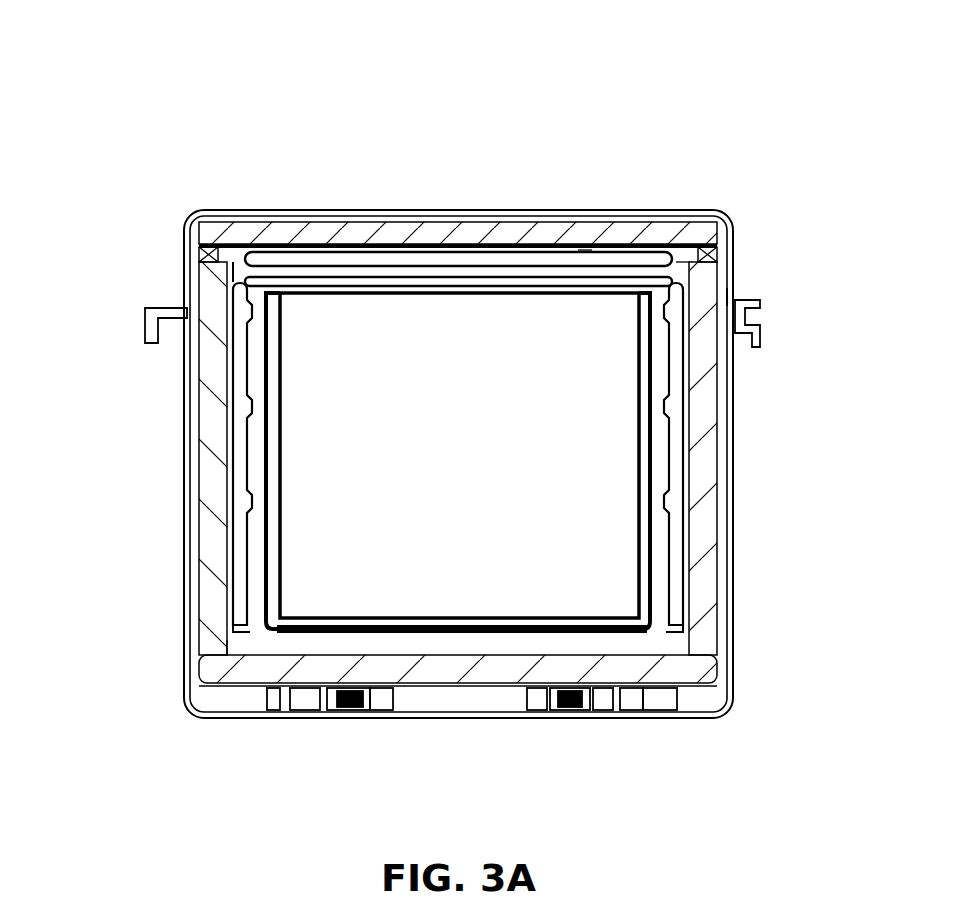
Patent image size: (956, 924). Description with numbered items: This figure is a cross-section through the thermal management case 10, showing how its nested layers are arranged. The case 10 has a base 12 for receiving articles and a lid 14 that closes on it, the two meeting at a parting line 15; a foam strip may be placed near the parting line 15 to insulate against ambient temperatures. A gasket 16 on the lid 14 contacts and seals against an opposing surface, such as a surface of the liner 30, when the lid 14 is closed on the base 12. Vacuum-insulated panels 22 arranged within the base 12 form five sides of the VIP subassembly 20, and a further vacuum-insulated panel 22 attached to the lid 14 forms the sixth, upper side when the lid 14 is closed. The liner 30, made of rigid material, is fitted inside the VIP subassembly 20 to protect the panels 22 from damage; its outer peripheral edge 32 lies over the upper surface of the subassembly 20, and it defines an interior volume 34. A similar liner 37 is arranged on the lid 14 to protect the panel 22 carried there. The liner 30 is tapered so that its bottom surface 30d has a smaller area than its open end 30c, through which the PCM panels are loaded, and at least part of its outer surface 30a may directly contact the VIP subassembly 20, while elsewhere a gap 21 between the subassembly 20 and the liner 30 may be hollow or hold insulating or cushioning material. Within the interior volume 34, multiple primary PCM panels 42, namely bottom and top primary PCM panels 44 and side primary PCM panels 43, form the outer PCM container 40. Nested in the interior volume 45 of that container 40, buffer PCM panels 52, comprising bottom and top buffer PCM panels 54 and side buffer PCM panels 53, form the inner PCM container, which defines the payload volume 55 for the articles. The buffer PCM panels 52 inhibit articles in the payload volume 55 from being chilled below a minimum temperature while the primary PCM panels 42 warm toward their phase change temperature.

The thermal management case 10 is at (792, 99).
The base 12 is at (727, 476).
The lid 14 is at (562, 222).
The parting line 15 is at (796, 317).
The gasket 16 is at (199, 254).
The VIP subassembly 20 is at (178, 401).
The gap 21 is at (219, 650).
The vacuum-insulated panel 22 is at (470, 222).
The liner 30 is at (702, 646).
The outer surface of the liner 30a is at (247, 628).
The open end of the liner 30c is at (247, 242).
The bottom surface of the liner 30d is at (652, 648).
The outer peripheral edge 32 is at (727, 297).
The interior volume of the liner 34 is at (684, 250).
The liner (lid liner) 37 is at (583, 252).
The outer PCM container 40 is at (227, 235).
The primary PCM panel 42 is at (463, 456).
The side primary PCM panel 43 is at (683, 380).
The bottom/top primary PCM panel 44 is at (270, 253).
The interior volume of the outer PCM container 45 is at (270, 642).
The buffer PCM panel 52 is at (476, 479).
The side buffer PCM panel 53 is at (267, 523).
The bottom/top buffer PCM panel 54 is at (338, 280).
The payload volume 55 is at (468, 468).